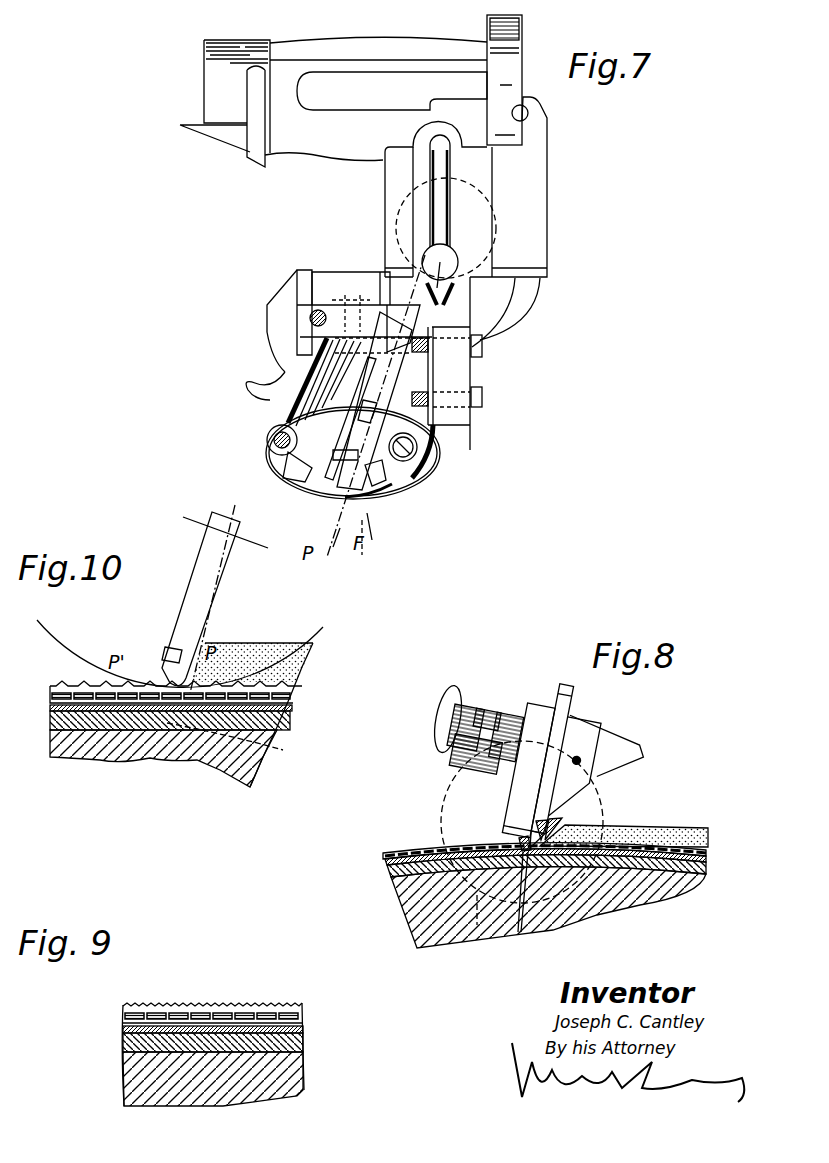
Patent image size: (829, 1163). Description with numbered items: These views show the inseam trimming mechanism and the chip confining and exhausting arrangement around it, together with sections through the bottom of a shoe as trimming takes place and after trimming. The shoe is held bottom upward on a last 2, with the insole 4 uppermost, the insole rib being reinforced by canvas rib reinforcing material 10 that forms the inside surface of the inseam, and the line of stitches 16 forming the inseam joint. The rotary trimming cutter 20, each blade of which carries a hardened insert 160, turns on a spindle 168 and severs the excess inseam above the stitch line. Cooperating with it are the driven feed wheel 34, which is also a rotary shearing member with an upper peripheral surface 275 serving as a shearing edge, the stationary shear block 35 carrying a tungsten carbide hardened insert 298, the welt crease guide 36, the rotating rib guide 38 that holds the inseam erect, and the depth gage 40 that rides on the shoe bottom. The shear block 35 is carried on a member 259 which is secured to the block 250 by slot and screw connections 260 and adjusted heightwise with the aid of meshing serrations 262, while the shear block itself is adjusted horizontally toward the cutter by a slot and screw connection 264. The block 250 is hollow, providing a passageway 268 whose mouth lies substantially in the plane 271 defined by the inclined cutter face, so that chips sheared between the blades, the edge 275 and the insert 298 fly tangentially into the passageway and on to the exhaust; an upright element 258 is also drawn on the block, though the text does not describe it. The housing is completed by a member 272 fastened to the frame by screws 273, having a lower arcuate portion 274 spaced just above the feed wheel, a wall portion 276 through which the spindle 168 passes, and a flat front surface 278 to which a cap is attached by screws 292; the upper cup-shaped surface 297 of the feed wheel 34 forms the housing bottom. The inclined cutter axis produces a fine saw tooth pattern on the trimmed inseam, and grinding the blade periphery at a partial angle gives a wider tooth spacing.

In FIG. 10, the last 2 is at (75, 752).
In FIG. 8, the last 2 is at (633, 905).
In FIG. 9, the last 2 is at (240, 1092).
In FIG. 10, the insole 4 is at (285, 722).
In FIG. 8, the insole 4 is at (700, 867).
In FIG. 9, the insole 4 is at (305, 1043).
In FIG. 10, the canvas rib reinforcing material 10 is at (285, 712).
In FIG. 8, the canvas rib reinforcing material 10 is at (700, 857).
In FIG. 9, the canvas rib reinforcing material 10 is at (303, 1029).
In FIG. 10, the line of stitches 16 is at (283, 694).
In FIG. 8, the line of stitches 16 is at (706, 830).
In FIG. 9, the line of stitches 16 is at (302, 1010).
In FIG. 7, the rotary trimming cutter 20 is at (340, 467).
In FIG. 10, the rotary trimming cutter 20 is at (217, 563).
In FIG. 8, the rotary trimming cutter 20 is at (556, 700).
In FIG. 7, the feed wheel 34 is at (303, 487).
In FIG. 10, the feed wheel 34 is at (60, 627).
In FIG. 8, the feed wheel 34 is at (443, 794).
In FIG. 7, the stationary shear block 35 is at (385, 488).
In FIG. 10, the welt crease guide 36 is at (283, 750).
In FIG. 8, the welt crease guide 36 is at (477, 925).
In FIG. 8, the rotating rib guide 38 is at (587, 793).
In FIG. 8, the depth gage 40 is at (520, 904).
In FIG. 10, the hardened insert 160 is at (165, 655).
In FIG. 8, the hardened insert 160 is at (513, 820).
In FIG. 7, the spindle 168 is at (262, 368).
In FIG. 7, the block 250 is at (395, 180).
In FIG. 7, the plunger rod 258 is at (445, 167).
In FIG. 7, the member 259 is at (440, 367).
In FIG. 7, the slot and screw connections 260 is at (483, 347).
In FIG. 7, the meshing serrations 262 is at (440, 397).
In FIG. 7, the slot and screw connection 264 is at (416, 452).
In FIG. 7, the passageway 268 is at (386, 270).
In FIG. 7, the plane 271 is at (333, 547).
In FIG. 7, the member 272 is at (267, 417).
In FIG. 7, the screws 273 is at (351, 302).
In FIG. 7, the lower arcuate portion 274 is at (342, 408).
In FIG. 7, the upper peripheral surface 275 is at (307, 489).
In FIG. 7, the wall portion 276 is at (287, 397).
In FIG. 7, the flat front surface 278 is at (318, 300).
In FIG. 7, the screws 292 is at (311, 312).
In FIG. 7, the upper cup-shaped surface 297 is at (323, 484).
In FIG. 7, the hardened insert 298 is at (377, 485).